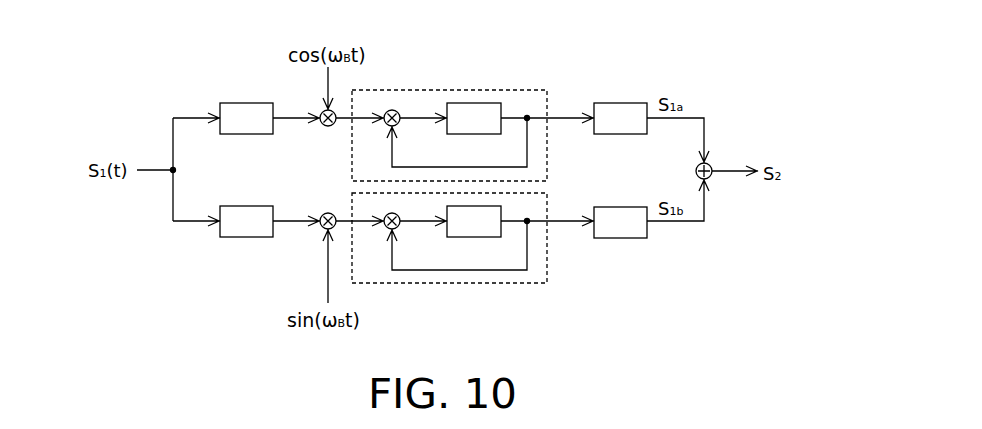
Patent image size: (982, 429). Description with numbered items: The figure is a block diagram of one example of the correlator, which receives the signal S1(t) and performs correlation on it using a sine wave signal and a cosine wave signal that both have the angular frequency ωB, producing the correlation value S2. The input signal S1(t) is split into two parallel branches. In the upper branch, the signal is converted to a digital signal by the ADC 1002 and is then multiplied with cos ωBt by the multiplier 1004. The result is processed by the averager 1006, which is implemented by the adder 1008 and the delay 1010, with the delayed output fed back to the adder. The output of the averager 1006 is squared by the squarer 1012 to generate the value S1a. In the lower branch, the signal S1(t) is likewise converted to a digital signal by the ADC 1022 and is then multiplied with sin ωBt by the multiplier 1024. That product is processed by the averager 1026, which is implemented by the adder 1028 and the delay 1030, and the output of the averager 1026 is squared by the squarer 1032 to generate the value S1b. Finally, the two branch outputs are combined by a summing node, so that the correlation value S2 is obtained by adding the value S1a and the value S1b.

The ADC 1002 is at (246, 103).
The multiplier 1004 is at (323, 126).
The averager 1006 is at (473, 112).
The adder 1008 is at (395, 110).
The delay 1010 is at (478, 103).
The squarer 1012 is at (620, 103).
The ADC 1022 is at (246, 237).
The multiplier 1024 is at (322, 229).
The averager 1026 is at (473, 262).
The adder 1028 is at (385, 228).
The delay 1030 is at (471, 237).
The squarer 1032 is at (620, 238).